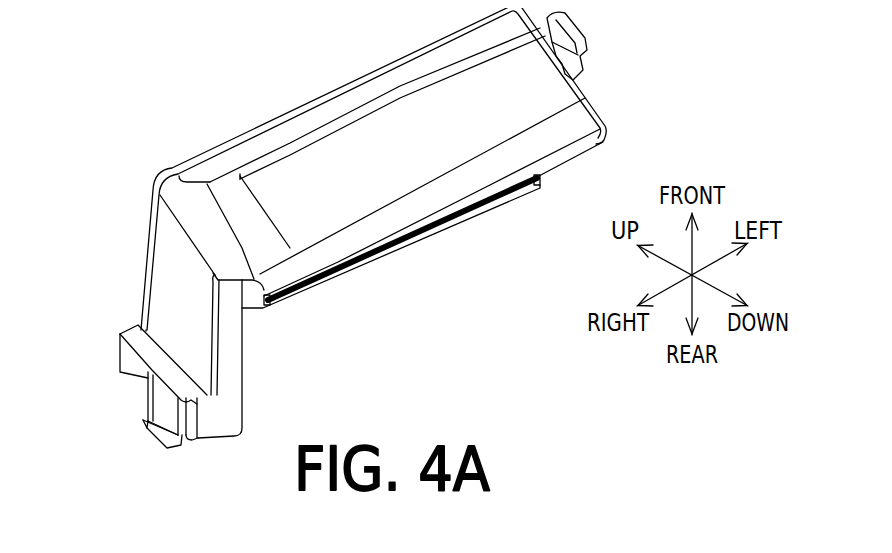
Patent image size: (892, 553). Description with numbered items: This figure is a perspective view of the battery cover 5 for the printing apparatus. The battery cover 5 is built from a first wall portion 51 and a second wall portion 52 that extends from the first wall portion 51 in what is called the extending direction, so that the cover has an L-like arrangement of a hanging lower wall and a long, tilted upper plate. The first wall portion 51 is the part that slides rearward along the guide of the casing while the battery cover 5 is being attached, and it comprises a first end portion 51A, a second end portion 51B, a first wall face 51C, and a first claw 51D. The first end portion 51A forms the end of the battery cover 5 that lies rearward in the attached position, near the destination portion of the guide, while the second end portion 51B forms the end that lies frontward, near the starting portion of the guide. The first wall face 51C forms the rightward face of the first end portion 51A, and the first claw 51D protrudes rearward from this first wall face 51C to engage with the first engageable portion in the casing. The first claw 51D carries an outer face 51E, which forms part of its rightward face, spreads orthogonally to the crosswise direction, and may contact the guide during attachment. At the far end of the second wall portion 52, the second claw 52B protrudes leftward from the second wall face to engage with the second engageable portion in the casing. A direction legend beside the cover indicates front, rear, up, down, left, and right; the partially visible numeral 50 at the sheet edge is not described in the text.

The battery cover 5 is at (163, 86).
The second wall portion 52 is at (371, 148).
The second claw 52B is at (582, 17).
The first wall portion 51 is at (167, 297).
The first end portion 51A is at (128, 368).
The second end portion 51B is at (166, 235).
The first wall face 51C is at (138, 384).
The first claw 51D is at (155, 452).
The outer face 51E is at (142, 446).
The holder 50 is at (414, 546).